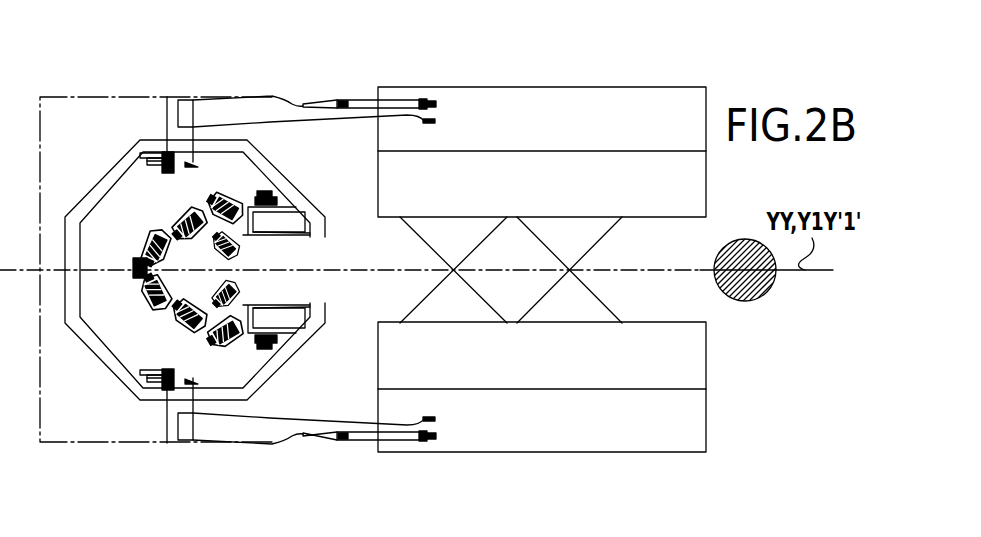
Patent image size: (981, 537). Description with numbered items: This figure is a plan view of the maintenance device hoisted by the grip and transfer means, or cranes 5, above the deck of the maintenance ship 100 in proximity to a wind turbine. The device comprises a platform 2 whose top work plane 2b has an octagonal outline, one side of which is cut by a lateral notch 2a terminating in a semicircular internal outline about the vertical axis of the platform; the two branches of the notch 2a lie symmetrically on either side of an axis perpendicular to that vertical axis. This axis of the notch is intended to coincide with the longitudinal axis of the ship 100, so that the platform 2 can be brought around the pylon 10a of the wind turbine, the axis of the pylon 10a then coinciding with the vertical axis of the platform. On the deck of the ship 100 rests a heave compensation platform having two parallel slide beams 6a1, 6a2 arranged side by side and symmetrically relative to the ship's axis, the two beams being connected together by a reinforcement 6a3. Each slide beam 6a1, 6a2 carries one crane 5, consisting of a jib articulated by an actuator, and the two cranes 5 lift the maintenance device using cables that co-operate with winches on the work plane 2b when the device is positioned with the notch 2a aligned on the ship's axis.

The platform 2 is at (117, 197).
The lateral notch 2a is at (290, 265).
The top work plane 2b is at (115, 336).
The grip and transfer means / crane 5 is at (267, 43).
The slide beam 6a1 is at (614, 128).
The slide beam 6a2 is at (609, 435).
The reinforcement 6a3 is at (603, 234).
The pylon 10a is at (745, 287).
The maintenance ship 100 is at (50, 424).